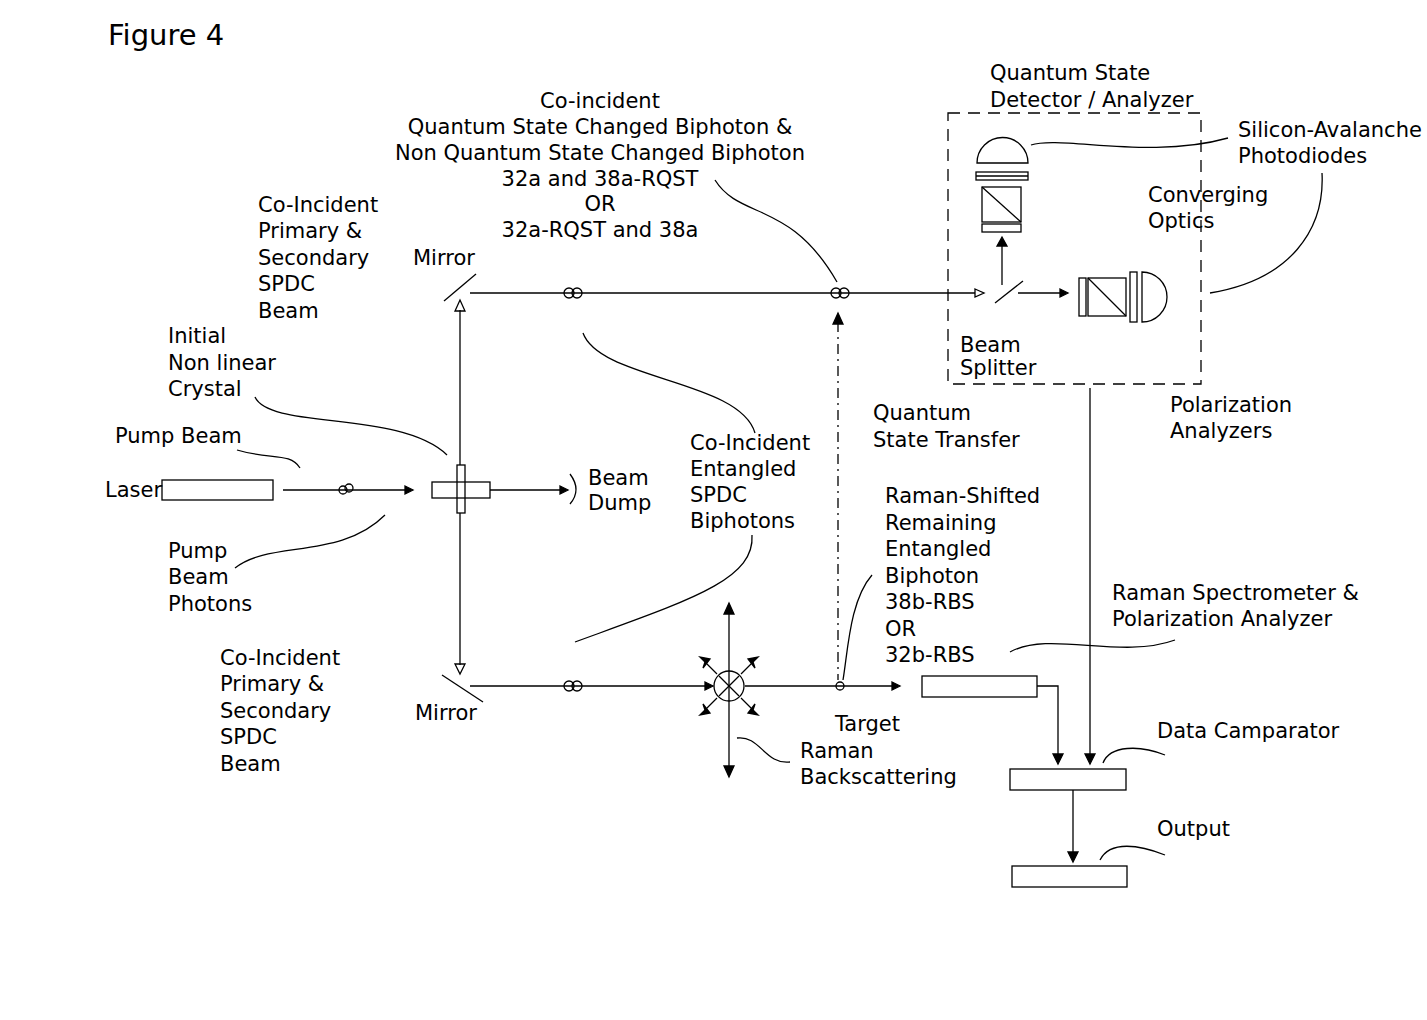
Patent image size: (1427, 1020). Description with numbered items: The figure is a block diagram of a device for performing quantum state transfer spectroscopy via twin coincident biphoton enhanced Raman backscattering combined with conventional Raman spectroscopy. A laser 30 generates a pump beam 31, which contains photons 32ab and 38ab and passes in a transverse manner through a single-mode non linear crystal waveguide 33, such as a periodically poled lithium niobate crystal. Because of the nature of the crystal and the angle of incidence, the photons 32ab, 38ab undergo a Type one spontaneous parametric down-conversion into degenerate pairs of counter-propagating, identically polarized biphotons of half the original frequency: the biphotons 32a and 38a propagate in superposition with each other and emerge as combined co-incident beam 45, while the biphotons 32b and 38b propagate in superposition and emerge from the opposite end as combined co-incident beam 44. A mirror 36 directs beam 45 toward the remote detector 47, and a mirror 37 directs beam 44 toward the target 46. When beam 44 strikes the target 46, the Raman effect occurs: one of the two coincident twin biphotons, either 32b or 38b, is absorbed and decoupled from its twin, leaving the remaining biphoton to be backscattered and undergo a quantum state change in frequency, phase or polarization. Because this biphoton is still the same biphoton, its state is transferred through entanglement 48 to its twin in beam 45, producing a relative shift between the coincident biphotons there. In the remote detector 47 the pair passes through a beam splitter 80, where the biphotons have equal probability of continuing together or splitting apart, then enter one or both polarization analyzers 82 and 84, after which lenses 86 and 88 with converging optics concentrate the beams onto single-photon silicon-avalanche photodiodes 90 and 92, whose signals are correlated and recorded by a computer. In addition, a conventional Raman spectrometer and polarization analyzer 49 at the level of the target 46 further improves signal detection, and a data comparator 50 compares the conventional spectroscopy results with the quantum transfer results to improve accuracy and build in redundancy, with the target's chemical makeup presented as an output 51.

The laser 30 is at (217, 490).
The pump beam 31 is at (348, 479).
The photon 38ab is at (374, 480).
The photon 32ab is at (377, 498).
The non linear crystal waveguide 33 is at (460, 486).
The combined co-incident beam 1 45 is at (328, 279).
The combined co-incident beam 2 44 is at (385, 620).
The mirror 36 is at (454, 286).
The mirror 37 is at (461, 690).
The biphoton 38a is at (578, 278).
The biphoton 32a is at (578, 305).
The biphoton 38b is at (578, 671).
The biphoton 32b is at (578, 696).
The target 46 is at (830, 720).
The entanglement 48 is at (851, 496).
The Raman spectrometer and polarization analyzer 49 is at (979, 686).
The data comparator 50 is at (1068, 780).
The output 51 is at (1069, 877).
The remote detector 47 is at (1074, 235).
The beam splitter 80 is at (1016, 304).
The polarization analyzer 82 is at (1165, 415).
The polarization analyzer 84 is at (1165, 415).
The lens 86 is at (1145, 185).
The lens 88 is at (1140, 193).
The silicon-avalanche photodiode 90 is at (1002, 140).
The silicon-avalanche photodiode 92 is at (1170, 297).